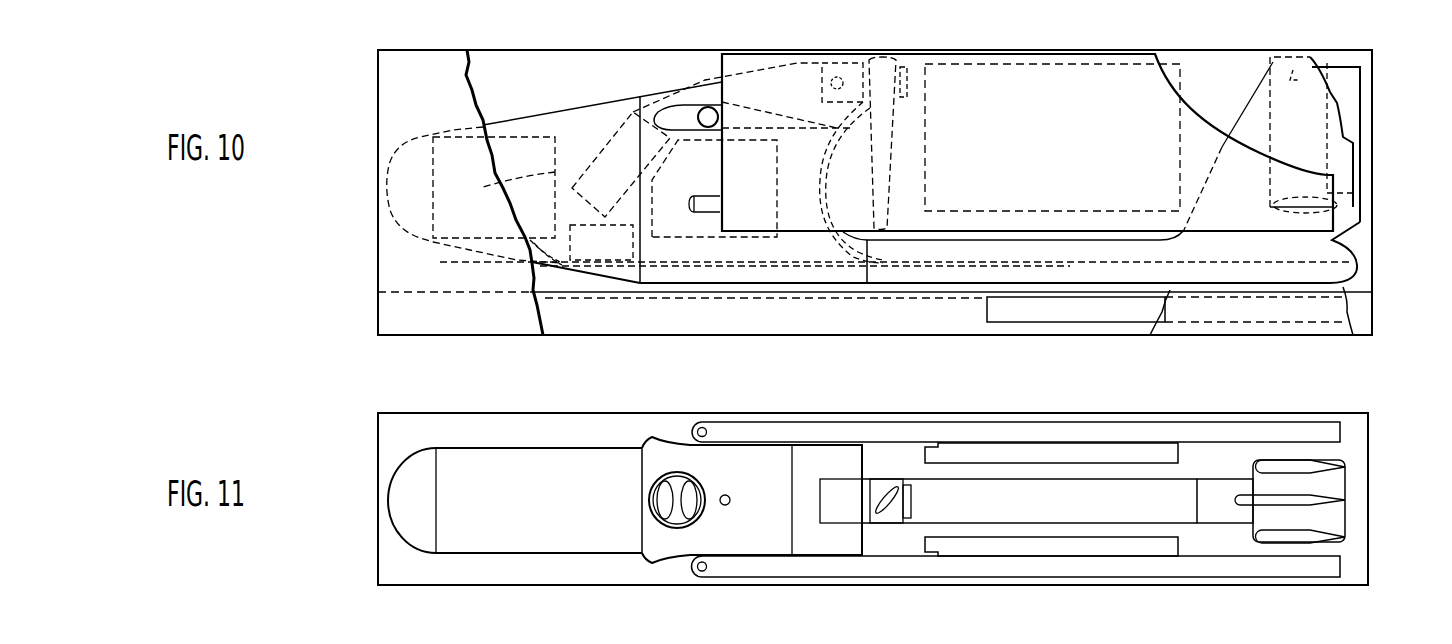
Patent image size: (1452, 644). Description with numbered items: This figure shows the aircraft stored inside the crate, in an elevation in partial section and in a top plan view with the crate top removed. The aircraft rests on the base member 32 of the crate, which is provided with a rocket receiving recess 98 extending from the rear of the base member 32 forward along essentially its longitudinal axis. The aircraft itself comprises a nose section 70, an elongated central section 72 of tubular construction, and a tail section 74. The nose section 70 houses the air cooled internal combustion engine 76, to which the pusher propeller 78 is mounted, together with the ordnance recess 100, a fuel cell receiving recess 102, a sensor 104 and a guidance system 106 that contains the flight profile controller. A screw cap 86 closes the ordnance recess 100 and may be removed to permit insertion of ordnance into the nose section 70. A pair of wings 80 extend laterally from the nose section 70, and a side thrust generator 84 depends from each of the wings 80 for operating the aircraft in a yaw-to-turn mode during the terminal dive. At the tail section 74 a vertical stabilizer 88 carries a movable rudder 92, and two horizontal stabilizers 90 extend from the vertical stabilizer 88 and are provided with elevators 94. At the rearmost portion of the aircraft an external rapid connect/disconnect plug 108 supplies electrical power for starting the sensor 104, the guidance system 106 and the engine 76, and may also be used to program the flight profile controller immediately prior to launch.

In FIG. 10, the base member 32 is at (377, 308).
In FIG. 10, the nose section 70 is at (526, 125).
In FIG. 11, the nose section 70 is at (530, 543).
In FIG. 11, the elongated central section 72 is at (1040, 513).
In FIG. 11, the tail section 74 is at (1218, 518).
In FIG. 10, the air cooled internal combustion engine 76 is at (835, 56).
In FIG. 11, the pusher propeller 78 is at (883, 517).
In FIG. 10, the wings 80 is at (727, 175).
In FIG. 11, the wings 80 is at (878, 430).
In FIG. 10, the side thrust generator 84 is at (1072, 62).
In FIG. 11, the side thrust generator 84 is at (1127, 452).
In FIG. 10, the screw cap 86 is at (664, 93).
In FIG. 11, the screw cap 86 is at (648, 502).
In FIG. 11, the vertical stabilizer 88 is at (1300, 497).
In FIG. 10, the horizontal stabilizers 90 is at (1323, 205).
In FIG. 11, the horizontal stabilizers 90 is at (1282, 543).
In FIG. 10, the rudder 92 is at (1358, 70).
In FIG. 11, the rudder 92 is at (1330, 502).
In FIG. 11, the elevators 94 is at (1333, 537).
In FIG. 10, the rocket receiving recess 98 is at (1372, 320).
In FIG. 10, the ordnance recess 100 is at (630, 110).
In FIG. 10, the fuel cell receiving recess 102 is at (702, 237).
In FIG. 10, the sensor 104 is at (498, 190).
In FIG. 10, the guidance system 106 is at (515, 260).
In FIG. 10, the external rapid connect/disconnect plug 108 is at (1358, 267).